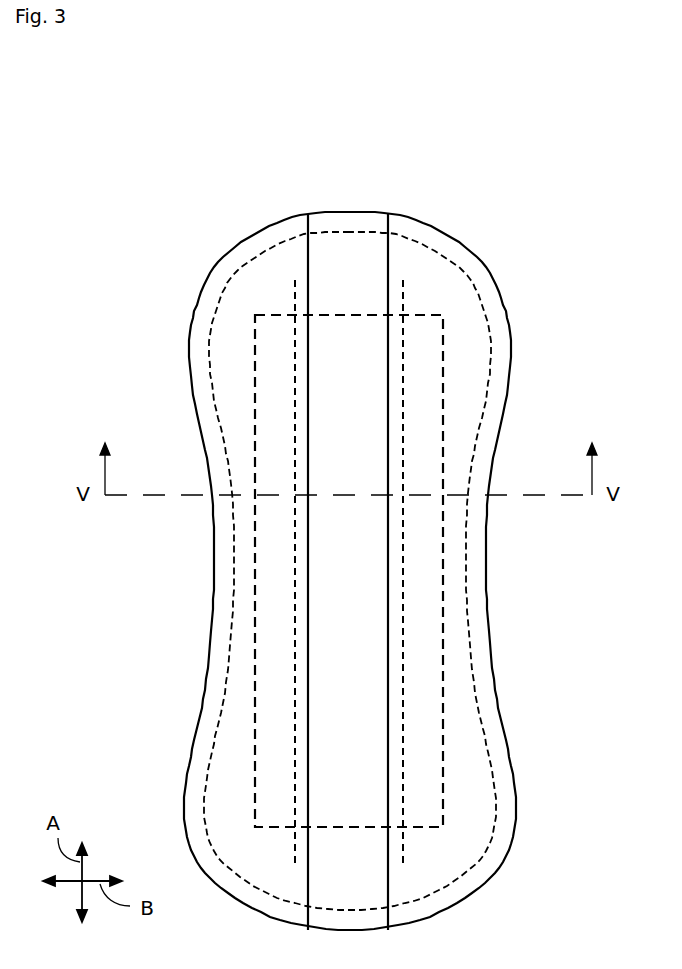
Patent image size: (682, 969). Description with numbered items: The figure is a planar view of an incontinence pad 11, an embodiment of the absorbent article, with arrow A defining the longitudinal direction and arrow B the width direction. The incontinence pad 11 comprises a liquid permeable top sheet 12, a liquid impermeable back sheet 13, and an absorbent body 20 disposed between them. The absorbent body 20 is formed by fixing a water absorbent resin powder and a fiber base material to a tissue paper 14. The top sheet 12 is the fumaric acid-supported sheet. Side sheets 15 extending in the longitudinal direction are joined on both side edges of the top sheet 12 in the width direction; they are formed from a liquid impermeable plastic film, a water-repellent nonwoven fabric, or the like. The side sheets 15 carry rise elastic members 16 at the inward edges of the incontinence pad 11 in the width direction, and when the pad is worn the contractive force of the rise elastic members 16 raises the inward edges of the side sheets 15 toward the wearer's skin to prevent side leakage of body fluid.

The incontinence pad 11 is at (455, 160).
The top sheet 12 is at (323, 222).
The back sheet 13 is at (370, 223).
The tissue paper 14 is at (446, 256).
The side sheets 15 is at (202, 290).
The rise elastic members 16 is at (295, 277).
The absorbent body 20 is at (444, 330).